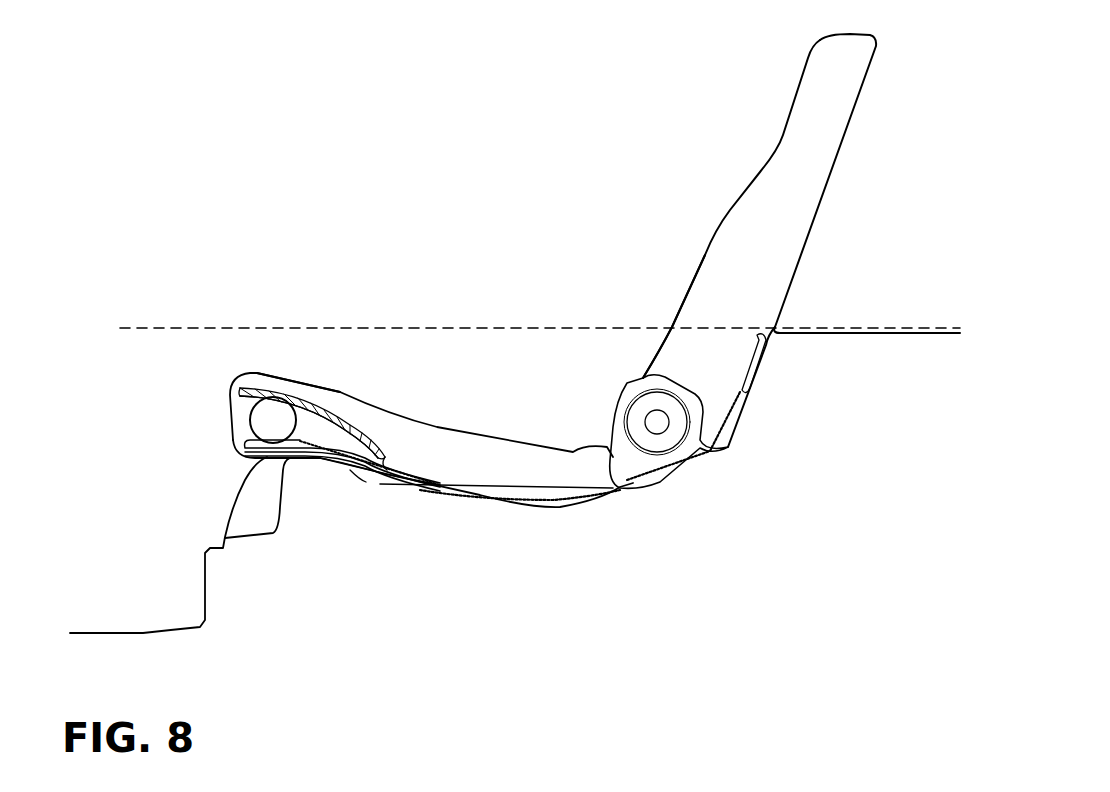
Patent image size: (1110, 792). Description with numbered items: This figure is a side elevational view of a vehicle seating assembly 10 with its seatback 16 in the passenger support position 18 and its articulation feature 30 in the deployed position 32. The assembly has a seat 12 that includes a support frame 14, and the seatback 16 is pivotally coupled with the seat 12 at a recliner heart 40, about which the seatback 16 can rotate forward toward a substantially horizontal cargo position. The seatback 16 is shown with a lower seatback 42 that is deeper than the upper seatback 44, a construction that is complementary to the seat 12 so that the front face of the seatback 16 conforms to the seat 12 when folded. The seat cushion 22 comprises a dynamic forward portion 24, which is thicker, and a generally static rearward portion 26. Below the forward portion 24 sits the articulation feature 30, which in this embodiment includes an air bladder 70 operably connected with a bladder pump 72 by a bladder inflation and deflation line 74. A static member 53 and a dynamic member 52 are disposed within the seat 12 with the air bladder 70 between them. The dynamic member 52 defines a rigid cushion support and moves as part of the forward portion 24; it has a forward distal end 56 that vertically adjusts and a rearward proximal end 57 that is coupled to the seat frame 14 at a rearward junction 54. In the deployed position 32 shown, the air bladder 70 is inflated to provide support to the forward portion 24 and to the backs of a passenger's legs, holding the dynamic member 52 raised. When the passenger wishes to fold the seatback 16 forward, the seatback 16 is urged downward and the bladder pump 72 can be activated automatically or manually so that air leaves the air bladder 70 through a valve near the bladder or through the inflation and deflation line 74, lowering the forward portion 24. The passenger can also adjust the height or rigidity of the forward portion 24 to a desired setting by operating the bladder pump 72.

The vehicle seating assembly 10 is at (250, 152).
The seat 12 is at (397, 427).
The support frame 14 is at (417, 487).
The seatback 16 is at (800, 238).
The passenger support position 18 is at (658, 199).
The seat cushion 22 is at (448, 452).
The dynamic forward portion 24 is at (260, 383).
The static rearward portion 26 is at (577, 470).
The articulation feature 30 is at (211, 451).
The deployed position 32 is at (219, 380).
The recliner heart 40 is at (662, 427).
The lower seatback 42 is at (705, 292).
The upper seatback 44 is at (810, 98).
The dynamic member 52 is at (317, 393).
The static member 53 is at (267, 458).
The rearward junction 54 is at (350, 477).
The forward distal end 56 is at (243, 388).
The rearward proximal end 57 is at (387, 453).
The air bladder 70 is at (257, 418).
The bladder pump 72 is at (750, 368).
The bladder inflation and deflation line 74 is at (527, 505).